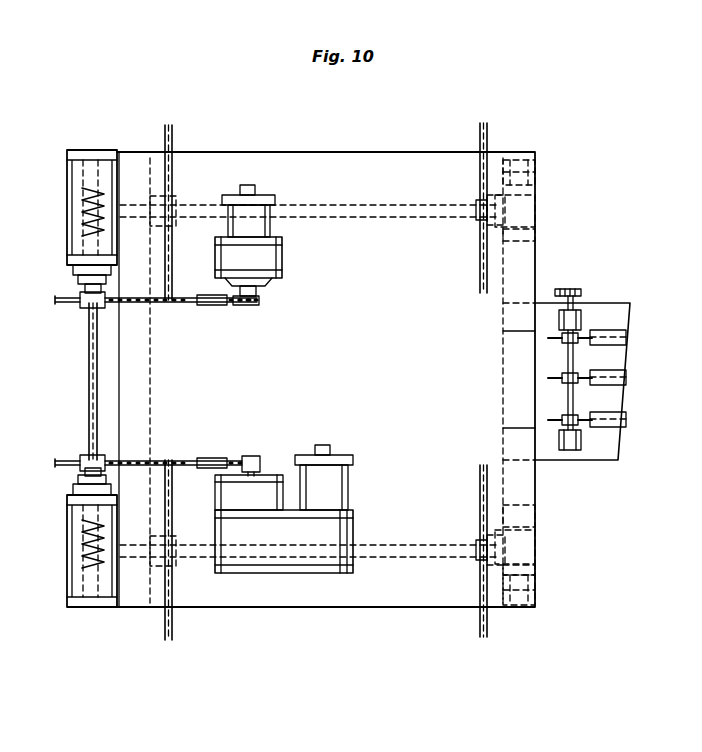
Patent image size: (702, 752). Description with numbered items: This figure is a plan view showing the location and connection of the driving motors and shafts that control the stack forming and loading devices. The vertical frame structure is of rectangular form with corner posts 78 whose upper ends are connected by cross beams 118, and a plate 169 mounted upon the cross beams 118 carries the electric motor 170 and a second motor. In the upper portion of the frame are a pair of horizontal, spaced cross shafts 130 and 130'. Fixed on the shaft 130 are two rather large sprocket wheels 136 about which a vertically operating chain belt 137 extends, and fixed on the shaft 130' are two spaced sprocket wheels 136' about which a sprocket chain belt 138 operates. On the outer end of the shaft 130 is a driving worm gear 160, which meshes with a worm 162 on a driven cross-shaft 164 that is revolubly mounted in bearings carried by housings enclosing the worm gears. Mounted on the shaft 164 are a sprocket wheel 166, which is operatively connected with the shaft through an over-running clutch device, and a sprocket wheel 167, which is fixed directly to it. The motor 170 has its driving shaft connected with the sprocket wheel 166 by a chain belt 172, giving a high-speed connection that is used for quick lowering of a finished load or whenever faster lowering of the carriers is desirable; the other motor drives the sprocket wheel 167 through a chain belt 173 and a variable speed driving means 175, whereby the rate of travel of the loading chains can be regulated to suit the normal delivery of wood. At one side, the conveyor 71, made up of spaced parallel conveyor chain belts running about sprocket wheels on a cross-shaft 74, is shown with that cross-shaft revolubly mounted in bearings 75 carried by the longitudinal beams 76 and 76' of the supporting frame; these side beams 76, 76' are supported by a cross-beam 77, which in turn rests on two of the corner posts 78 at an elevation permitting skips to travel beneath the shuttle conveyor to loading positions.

The plate 169 is at (328, 170).
The cross beams 118 is at (150, 365).
The cross shaft 130 is at (308, 198).
The cross shaft 130' is at (308, 539).
The chain belt 137 is at (172, 150).
The sprocket chain belt 138 is at (173, 622).
The sprocket wheel 136 is at (361, 172).
The sprocket wheel 136' is at (338, 566).
The corner post 78 is at (520, 172).
The cross-beam 77 is at (520, 511).
The worm 162 is at (76, 236).
The driving worm gear 160 is at (80, 250).
The sprocket wheel 166 is at (72, 304).
The chain belt 172 is at (185, 306).
The driven cross-shaft 164 is at (89, 372).
The sprocket wheel 167 is at (70, 462).
The chain belt 173 is at (183, 460).
The electric motor 170 is at (248, 192).
The variable speed driving means 175 is at (255, 490).
The longitudinal beam 76' is at (586, 367).
The bearing 75 is at (580, 312).
The cross-shaft 74 is at (575, 355).
The conveyor 71 is at (602, 388).
The longitudinal beam 76 is at (606, 432).